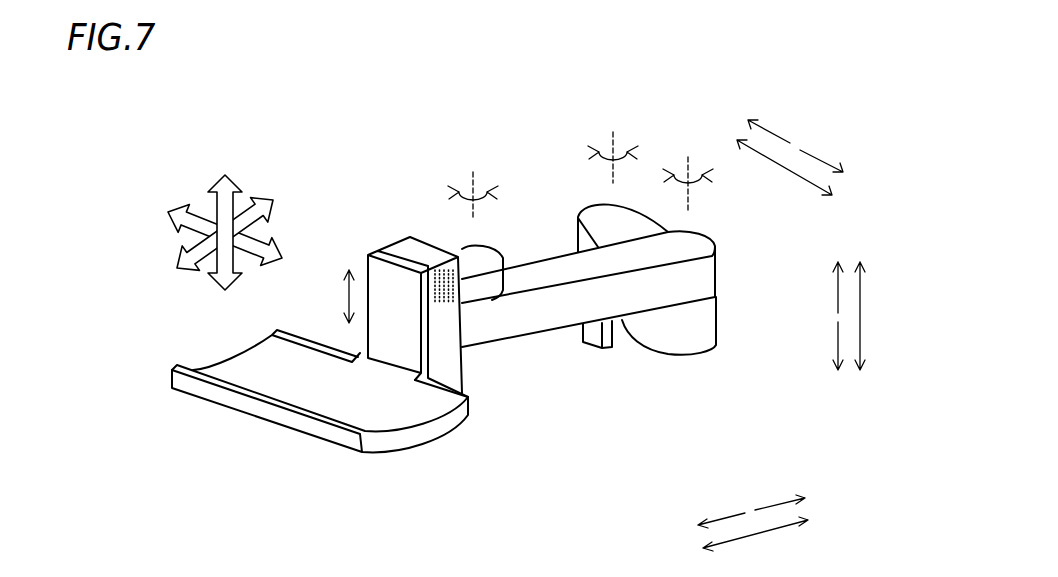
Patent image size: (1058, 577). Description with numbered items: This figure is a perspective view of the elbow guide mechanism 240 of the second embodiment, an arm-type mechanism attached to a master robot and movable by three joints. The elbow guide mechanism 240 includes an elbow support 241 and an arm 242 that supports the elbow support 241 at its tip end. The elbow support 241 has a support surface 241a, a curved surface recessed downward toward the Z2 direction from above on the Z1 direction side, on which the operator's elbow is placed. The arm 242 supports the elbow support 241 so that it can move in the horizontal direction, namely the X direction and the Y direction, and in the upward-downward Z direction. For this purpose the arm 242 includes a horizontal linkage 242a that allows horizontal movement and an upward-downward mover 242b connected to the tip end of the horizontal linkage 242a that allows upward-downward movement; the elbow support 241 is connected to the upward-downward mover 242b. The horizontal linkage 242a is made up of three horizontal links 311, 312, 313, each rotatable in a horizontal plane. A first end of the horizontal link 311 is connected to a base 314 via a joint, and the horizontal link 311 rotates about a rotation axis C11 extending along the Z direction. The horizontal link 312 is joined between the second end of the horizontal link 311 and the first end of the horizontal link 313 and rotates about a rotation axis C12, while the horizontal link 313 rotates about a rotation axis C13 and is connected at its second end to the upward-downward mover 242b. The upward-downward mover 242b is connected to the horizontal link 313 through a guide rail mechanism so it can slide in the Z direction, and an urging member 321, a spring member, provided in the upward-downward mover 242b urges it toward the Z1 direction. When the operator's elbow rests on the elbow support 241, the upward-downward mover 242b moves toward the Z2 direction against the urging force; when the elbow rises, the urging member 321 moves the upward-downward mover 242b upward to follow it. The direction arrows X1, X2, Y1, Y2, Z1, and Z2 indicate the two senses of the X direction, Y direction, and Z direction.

The elbow guide mechanism 240 is at (290, 120).
The elbow support 241 is at (278, 415).
The support surface 241a is at (253, 377).
The arm 242 is at (742, 268).
The horizontal linkage 242a is at (576, 378).
The upward-downward mover 242b is at (409, 229).
The horizontal link 311 is at (600, 222).
The horizontal link 312 is at (578, 266).
The horizontal link 313 is at (464, 252).
The base 314 is at (622, 337).
The urging member 321 is at (443, 303).
The rotation axis C11 is at (613, 143).
The rotation axis C12 is at (688, 171).
The rotation axis C13 is at (473, 183).
The X direction X is at (784, 167).
The X1 direction X1 is at (773, 128).
The X2 direction X2 is at (821, 154).
The Y direction Y is at (755, 535).
The Y1 direction Y1 is at (721, 509).
The Y2 direction Y2 is at (780, 495).
The Z direction Z is at (868, 316).
The Z1 direction Z1 is at (824, 287).
The Z2 direction Z2 is at (824, 346).